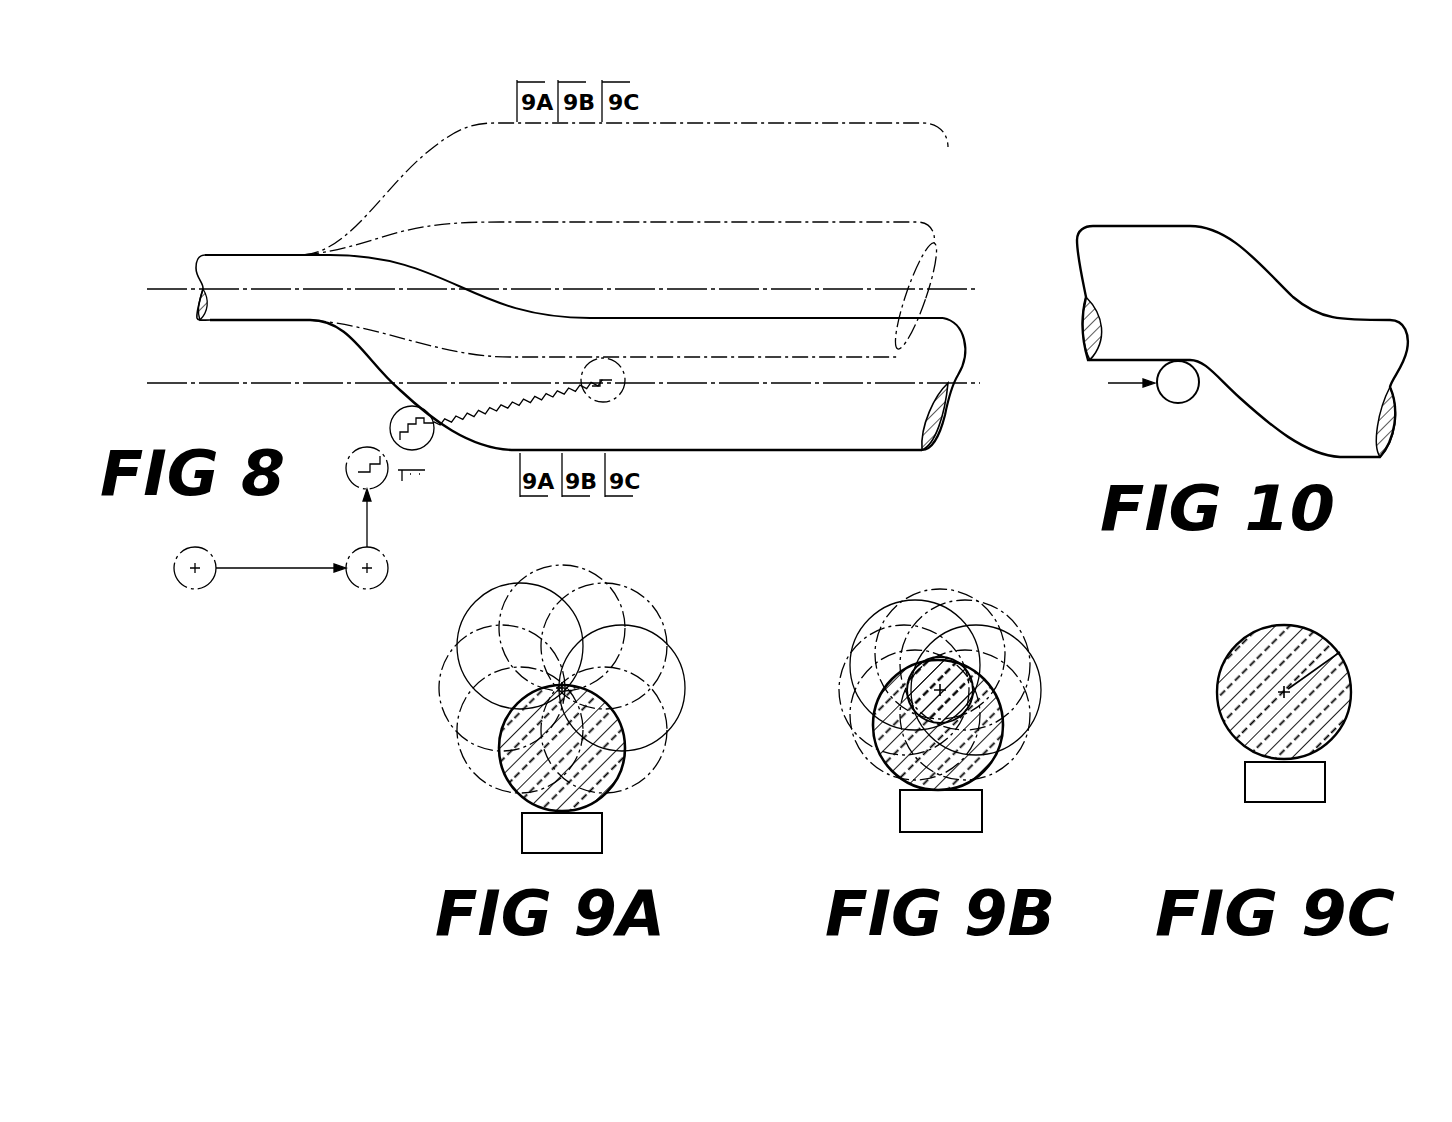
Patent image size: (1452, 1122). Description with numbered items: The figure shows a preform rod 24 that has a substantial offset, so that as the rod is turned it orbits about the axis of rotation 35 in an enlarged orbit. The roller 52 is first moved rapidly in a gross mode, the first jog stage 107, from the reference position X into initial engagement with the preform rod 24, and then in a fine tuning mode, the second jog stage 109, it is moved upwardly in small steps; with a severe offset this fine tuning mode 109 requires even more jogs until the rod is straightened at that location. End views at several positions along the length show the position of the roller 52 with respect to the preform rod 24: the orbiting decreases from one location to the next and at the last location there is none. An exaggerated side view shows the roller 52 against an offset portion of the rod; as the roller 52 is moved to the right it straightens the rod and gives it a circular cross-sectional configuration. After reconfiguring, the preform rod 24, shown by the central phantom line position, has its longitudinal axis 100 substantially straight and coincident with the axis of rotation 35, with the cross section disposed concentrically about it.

In FIG. 8, the preform rod 24 is at (747, 220).
In FIG. 9A, the preform rod 24 is at (503, 780).
In FIG. 9B, the preform rod 24 is at (893, 768).
In FIG. 9C, the preform rod 24 is at (1240, 733).
In FIG. 10, the preform rod 24 is at (1183, 235).
In FIG. 8, the axis of rotation 35 is at (940, 290).
In FIG. 9C, the axis of rotation 35 is at (1340, 652).
In FIG. 8, the roller 52 is at (216, 550).
In FIG. 9A, the roller 52 is at (605, 838).
In FIG. 9B, the roller 52 is at (983, 810).
In FIG. 9C, the roller 52 is at (1248, 786).
In FIG. 10, the roller 52 is at (1178, 400).
In FIG. 8, the longitudinal axis 100 is at (958, 383).
In FIG. 8, the first jog stage 107 is at (392, 447).
In FIG. 8, the second jog stage 109 is at (517, 407).